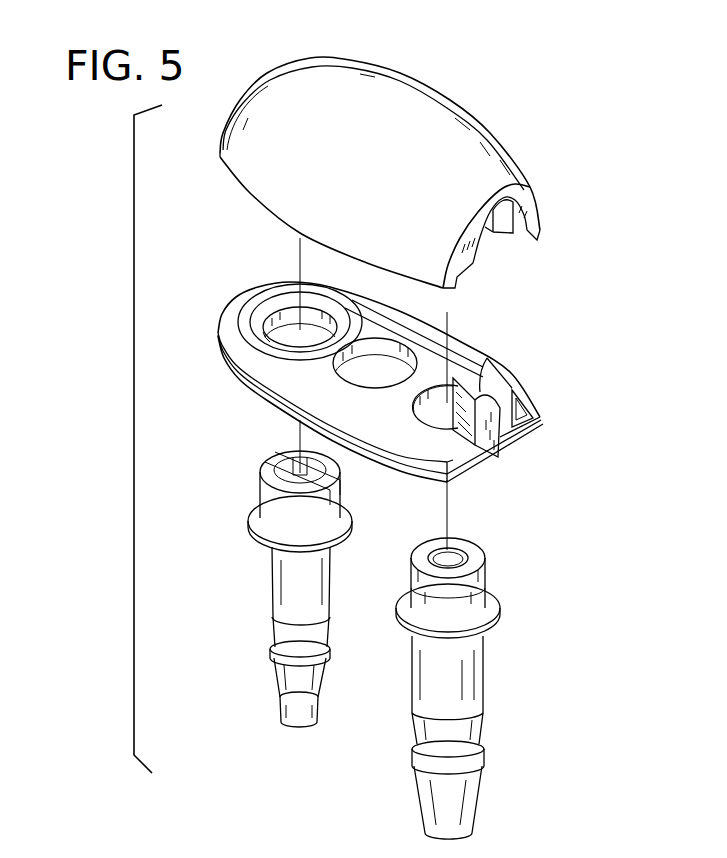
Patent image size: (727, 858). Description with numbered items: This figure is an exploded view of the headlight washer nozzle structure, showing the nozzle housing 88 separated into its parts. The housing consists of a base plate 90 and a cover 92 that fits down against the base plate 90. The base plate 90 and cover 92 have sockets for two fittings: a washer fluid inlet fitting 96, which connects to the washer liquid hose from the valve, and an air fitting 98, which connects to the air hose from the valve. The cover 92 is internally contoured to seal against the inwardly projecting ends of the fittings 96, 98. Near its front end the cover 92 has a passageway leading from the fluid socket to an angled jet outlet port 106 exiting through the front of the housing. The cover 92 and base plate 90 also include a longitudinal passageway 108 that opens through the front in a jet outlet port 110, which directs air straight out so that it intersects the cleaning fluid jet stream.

The nozzle housing 88 is at (410, 68).
The base plate 90 is at (232, 312).
The cover 92 is at (464, 128).
The washer fluid inlet fitting 96 is at (285, 597).
The air fitting 98 is at (472, 677).
The jet outlet port 106 is at (496, 420).
The longitudinal passageway 108 is at (456, 375).
The jet outlet port 110 is at (538, 419).